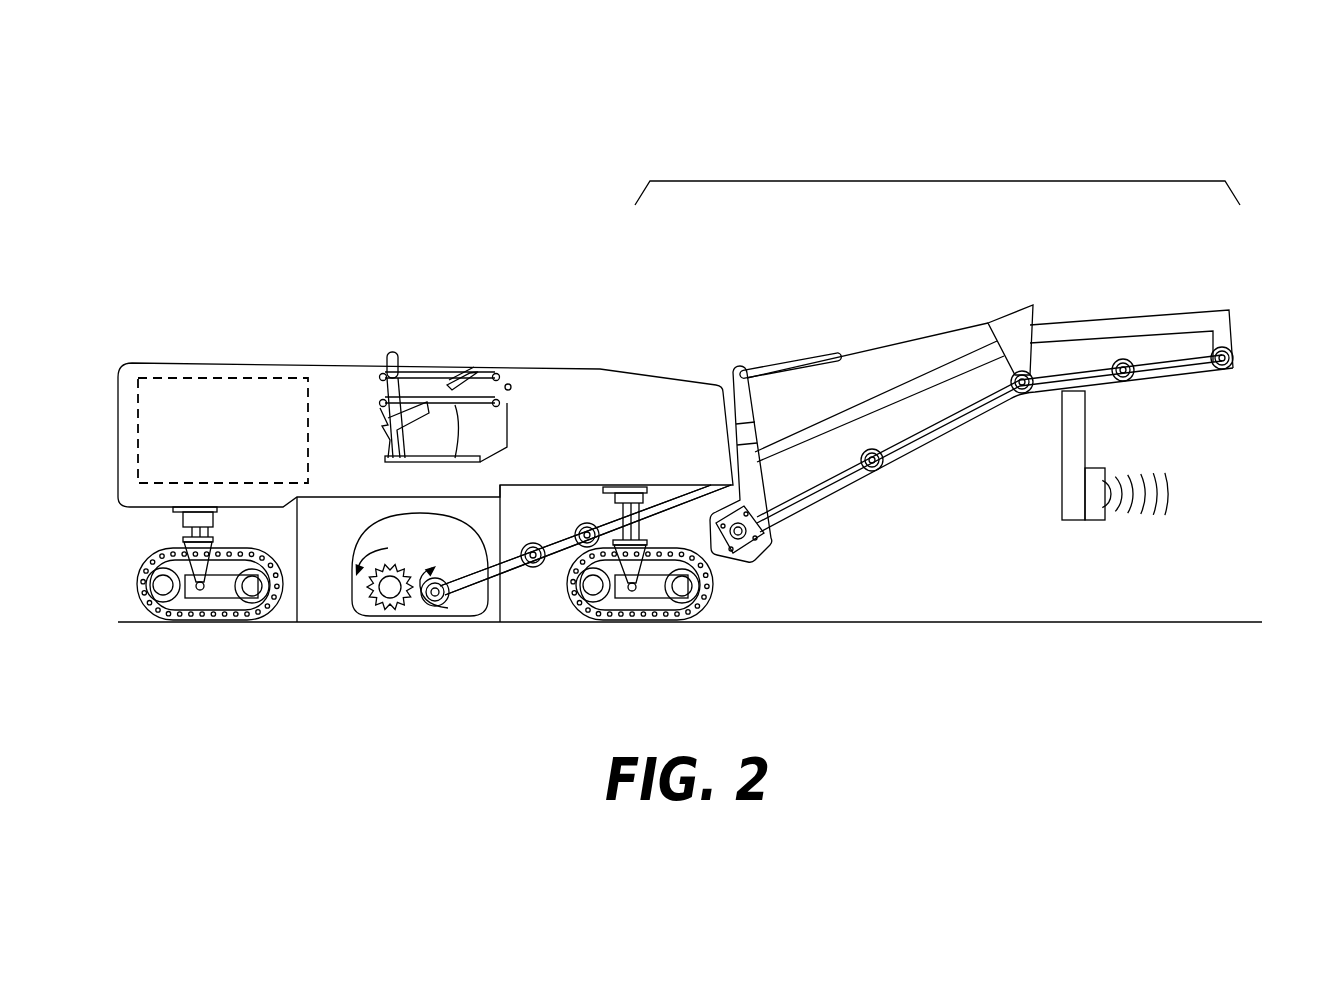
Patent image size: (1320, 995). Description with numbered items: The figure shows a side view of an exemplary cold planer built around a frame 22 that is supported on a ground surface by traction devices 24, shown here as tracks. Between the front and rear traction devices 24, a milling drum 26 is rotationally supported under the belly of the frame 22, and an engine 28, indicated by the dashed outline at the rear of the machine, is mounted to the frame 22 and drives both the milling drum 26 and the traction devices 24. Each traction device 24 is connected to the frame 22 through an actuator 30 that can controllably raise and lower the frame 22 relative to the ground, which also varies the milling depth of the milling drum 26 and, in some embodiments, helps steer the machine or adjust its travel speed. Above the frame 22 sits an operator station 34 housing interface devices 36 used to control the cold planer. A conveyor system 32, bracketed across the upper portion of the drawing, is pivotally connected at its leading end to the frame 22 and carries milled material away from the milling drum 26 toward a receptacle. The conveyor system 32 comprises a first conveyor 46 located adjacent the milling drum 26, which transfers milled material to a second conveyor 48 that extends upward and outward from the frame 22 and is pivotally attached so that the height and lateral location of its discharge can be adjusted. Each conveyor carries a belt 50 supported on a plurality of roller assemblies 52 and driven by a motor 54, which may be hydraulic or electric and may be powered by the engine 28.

The frame 22 is at (618, 392).
The traction devices 24 is at (280, 612).
The milling drum 26 is at (388, 612).
The engine 28 is at (177, 378).
The actuators 30 is at (198, 552).
The conveyor system 32 is at (943, 181).
The operator station 34 is at (428, 322).
The interface devices 36 is at (447, 383).
The first conveyor 46 is at (533, 600).
The second conveyor 48 is at (935, 500).
The belt 50 is at (558, 541).
The roller assemblies 52 is at (868, 470).
The motor 54 is at (767, 538).